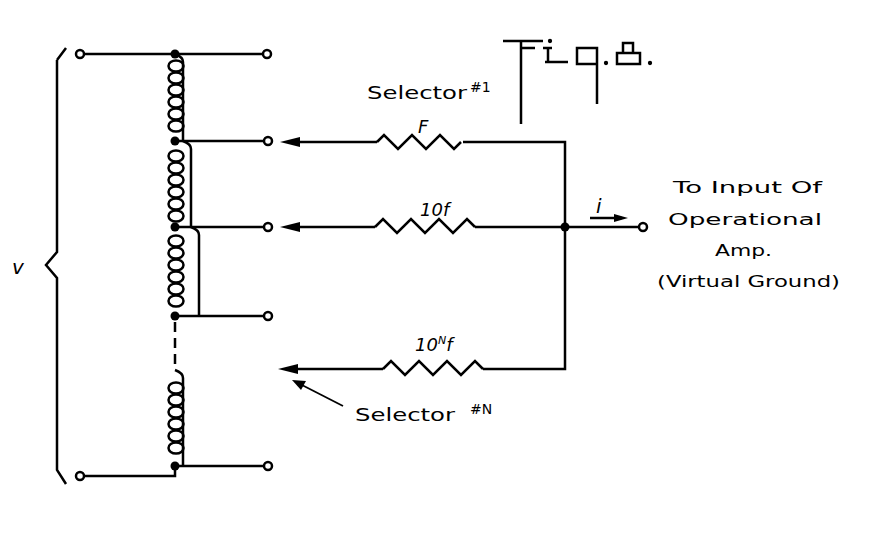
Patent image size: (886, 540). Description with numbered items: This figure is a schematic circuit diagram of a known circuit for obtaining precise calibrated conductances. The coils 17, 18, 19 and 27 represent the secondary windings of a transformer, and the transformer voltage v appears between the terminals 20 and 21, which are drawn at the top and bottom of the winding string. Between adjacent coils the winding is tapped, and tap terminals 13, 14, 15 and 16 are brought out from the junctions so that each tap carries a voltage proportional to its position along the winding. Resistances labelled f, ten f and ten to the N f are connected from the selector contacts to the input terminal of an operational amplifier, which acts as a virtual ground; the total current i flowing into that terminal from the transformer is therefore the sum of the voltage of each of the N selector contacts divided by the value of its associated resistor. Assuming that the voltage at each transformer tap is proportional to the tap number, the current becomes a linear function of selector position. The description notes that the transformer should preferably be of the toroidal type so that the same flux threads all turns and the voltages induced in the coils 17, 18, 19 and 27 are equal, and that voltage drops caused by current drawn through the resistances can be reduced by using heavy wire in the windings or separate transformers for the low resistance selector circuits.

The terminal 13 is at (277, 44).
The tap terminal 14 is at (281, 133).
The tap terminal 15 is at (285, 218).
The tap terminal 16 is at (285, 306).
The coil 17 is at (166, 113).
The coil 18 is at (166, 191).
The coil 19 is at (166, 268).
The terminal 20 is at (90, 46).
The terminal 21 is at (80, 482).
The coil 27 is at (166, 426).